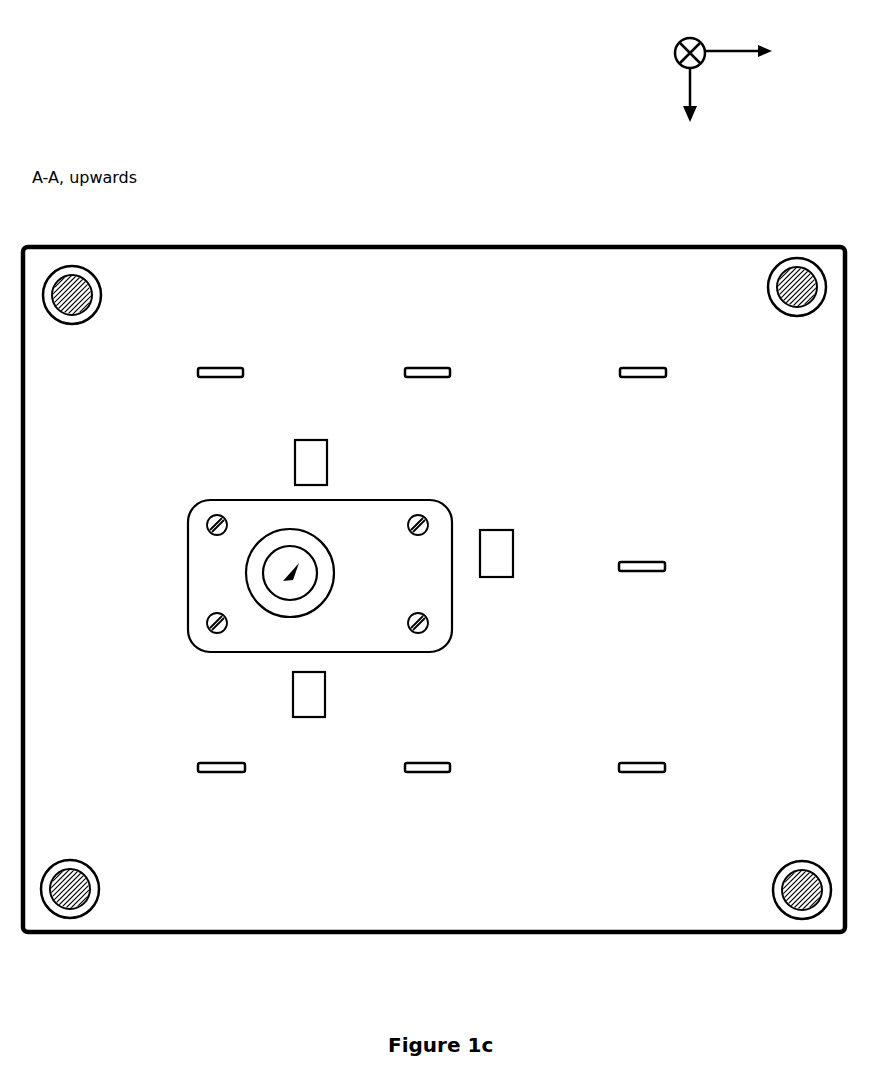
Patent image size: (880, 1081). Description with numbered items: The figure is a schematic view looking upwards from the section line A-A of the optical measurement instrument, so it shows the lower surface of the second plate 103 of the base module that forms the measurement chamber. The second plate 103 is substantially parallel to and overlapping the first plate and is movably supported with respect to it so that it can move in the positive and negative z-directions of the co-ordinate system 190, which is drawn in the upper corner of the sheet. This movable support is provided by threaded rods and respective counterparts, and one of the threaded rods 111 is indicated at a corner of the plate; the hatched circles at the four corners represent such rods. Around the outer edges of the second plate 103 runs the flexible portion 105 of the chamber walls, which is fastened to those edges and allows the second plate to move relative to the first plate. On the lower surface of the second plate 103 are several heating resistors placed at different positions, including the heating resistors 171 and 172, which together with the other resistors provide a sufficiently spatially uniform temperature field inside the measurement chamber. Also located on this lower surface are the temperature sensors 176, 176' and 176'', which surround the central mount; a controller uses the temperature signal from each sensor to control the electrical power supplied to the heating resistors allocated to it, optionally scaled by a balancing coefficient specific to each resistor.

The co-ordinate system 190 is at (713, 93).
The threaded rod 111 is at (770, 296).
The heating resistor 171 is at (223, 378).
The heating resistor 172 is at (650, 378).
The temperature sensor 176' is at (347, 462).
The temperature sensor 176 is at (489, 527).
The temperature sensor 176'' is at (351, 694).
The second plate 103 is at (434, 589).
The flexible portion 105 is at (279, 932).